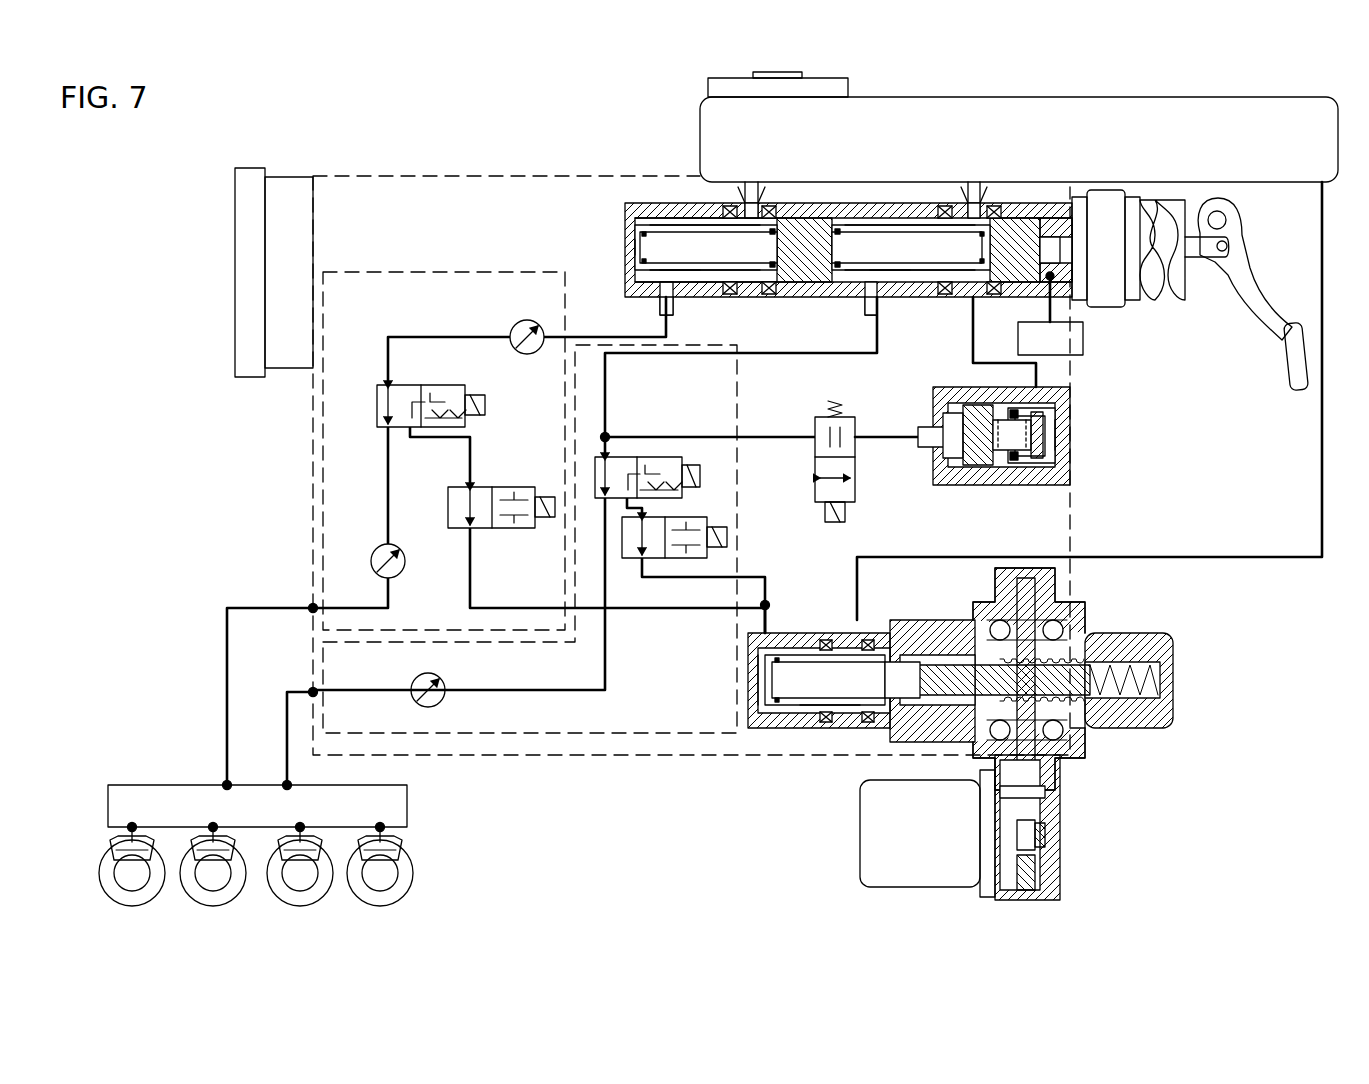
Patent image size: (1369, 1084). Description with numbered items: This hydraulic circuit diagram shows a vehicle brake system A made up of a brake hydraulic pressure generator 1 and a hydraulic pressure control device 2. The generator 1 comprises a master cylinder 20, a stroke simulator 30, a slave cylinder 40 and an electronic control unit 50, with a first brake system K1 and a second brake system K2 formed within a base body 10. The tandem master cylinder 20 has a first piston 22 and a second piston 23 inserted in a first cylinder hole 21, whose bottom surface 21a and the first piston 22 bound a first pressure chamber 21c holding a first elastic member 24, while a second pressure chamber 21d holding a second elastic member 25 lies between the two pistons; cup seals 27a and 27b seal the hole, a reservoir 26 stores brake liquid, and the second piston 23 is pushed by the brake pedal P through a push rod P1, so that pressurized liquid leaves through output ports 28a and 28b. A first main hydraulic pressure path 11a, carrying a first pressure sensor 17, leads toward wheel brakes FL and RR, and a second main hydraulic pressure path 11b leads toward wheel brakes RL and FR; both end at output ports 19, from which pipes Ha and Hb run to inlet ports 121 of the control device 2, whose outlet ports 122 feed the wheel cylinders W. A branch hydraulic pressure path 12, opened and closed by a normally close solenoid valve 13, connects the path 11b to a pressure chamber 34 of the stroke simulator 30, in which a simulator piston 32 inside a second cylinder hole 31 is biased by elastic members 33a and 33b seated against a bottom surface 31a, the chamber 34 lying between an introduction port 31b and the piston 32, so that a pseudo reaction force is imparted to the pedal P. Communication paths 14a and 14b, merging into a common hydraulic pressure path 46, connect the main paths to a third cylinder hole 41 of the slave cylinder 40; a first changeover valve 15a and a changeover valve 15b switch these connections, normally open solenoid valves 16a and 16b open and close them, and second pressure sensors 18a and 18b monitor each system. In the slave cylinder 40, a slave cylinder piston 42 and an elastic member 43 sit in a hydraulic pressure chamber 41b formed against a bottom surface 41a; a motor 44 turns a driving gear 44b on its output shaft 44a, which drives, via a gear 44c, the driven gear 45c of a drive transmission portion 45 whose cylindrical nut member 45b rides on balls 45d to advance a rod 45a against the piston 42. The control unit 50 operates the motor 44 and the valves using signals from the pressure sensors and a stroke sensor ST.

The brake hydraulic pressure generator 1 is at (467, 156).
The hydraulic pressure control device 2 is at (130, 762).
The base body 10 is at (413, 176).
The first main hydraulic pressure path 11a is at (466, 337).
The second main hydraulic pressure path 11b is at (772, 353).
The branch hydraulic pressure path 12 is at (682, 437).
The normally close solenoid valve 13 is at (860, 428).
The first communication path 14a is at (470, 446).
The second communication path 14b is at (638, 580).
The first changeover valve 15a is at (485, 406).
The changeover valve 15b is at (696, 476).
The normally open solenoid valve 16a is at (548, 490).
The normally open solenoid valve 16b is at (720, 522).
The first pressure sensor 17 is at (520, 322).
The second pressure sensor 18a is at (378, 547).
The second pressure sensor 18b is at (445, 684).
The output port 19 is at (313, 606).
The master cylinder 20 is at (640, 203).
The first cylinder hole 21 is at (650, 224).
The bottom surface 21a is at (635, 248).
The first pressure chamber 21c is at (692, 282).
The second pressure chamber 21d is at (908, 282).
The first piston 22 is at (802, 230).
The second piston 23 is at (1000, 232).
The first elastic member 24 is at (662, 218).
The second elastic member 25 is at (888, 232).
The reservoir 26 is at (1152, 100).
The cup seal 27a is at (734, 294).
The cup seal 27b is at (769, 294).
The output port 28a is at (660, 308).
The output port 28b is at (868, 310).
The stroke simulator 30 is at (1075, 470).
The second cylinder hole 31 is at (1070, 413).
The bottom surface 31a is at (1070, 443).
The introduction port 31b is at (925, 428).
The simulator piston 32 is at (963, 470).
The elastic member 33a is at (1038, 468).
The elastic member 33b is at (996, 468).
The pressure chamber 34 is at (943, 468).
The slave cylinder 40 is at (1180, 655).
The third cylinder hole 41 is at (800, 636).
The bottom surface 41a is at (762, 728).
The hydraulic pressure chamber 41b is at (826, 715).
The slave cylinder piston 42 is at (905, 636).
The elastic member 43 is at (792, 728).
The motor 44 is at (860, 836).
The output shaft 44a is at (1035, 838).
The driving gear 44b is at (1040, 860).
The gear 44c is at (1040, 812).
The drive transmission portion 45 is at (1092, 755).
The rod 45a is at (1115, 663).
The cylindrical nut member 45b is at (1080, 633).
The driven gear 45c is at (1035, 578).
The balls 45d is at (1098, 730).
The common hydraulic pressure path 46 is at (770, 600).
The electronic control unit 50 is at (235, 265).
The inlet port 121 is at (224, 784).
The outlet port 122 is at (134, 826).
The vehicle brake system A is at (200, 158).
The first brake system K1 is at (415, 272).
The second brake system K2 is at (607, 755).
The brake pedal P is at (1262, 340).
The push rod P1 is at (1052, 243).
The stroke sensor ST is at (1050, 313).
The pipe Ha is at (240, 606).
The pipe Hb is at (287, 742).
The wheel cylinder W is at (153, 843).
The wheel brake FL is at (157, 900).
The wheel brake FR is at (407, 900).
The wheel brake RL is at (324, 900).
The wheel brake RR is at (237, 900).